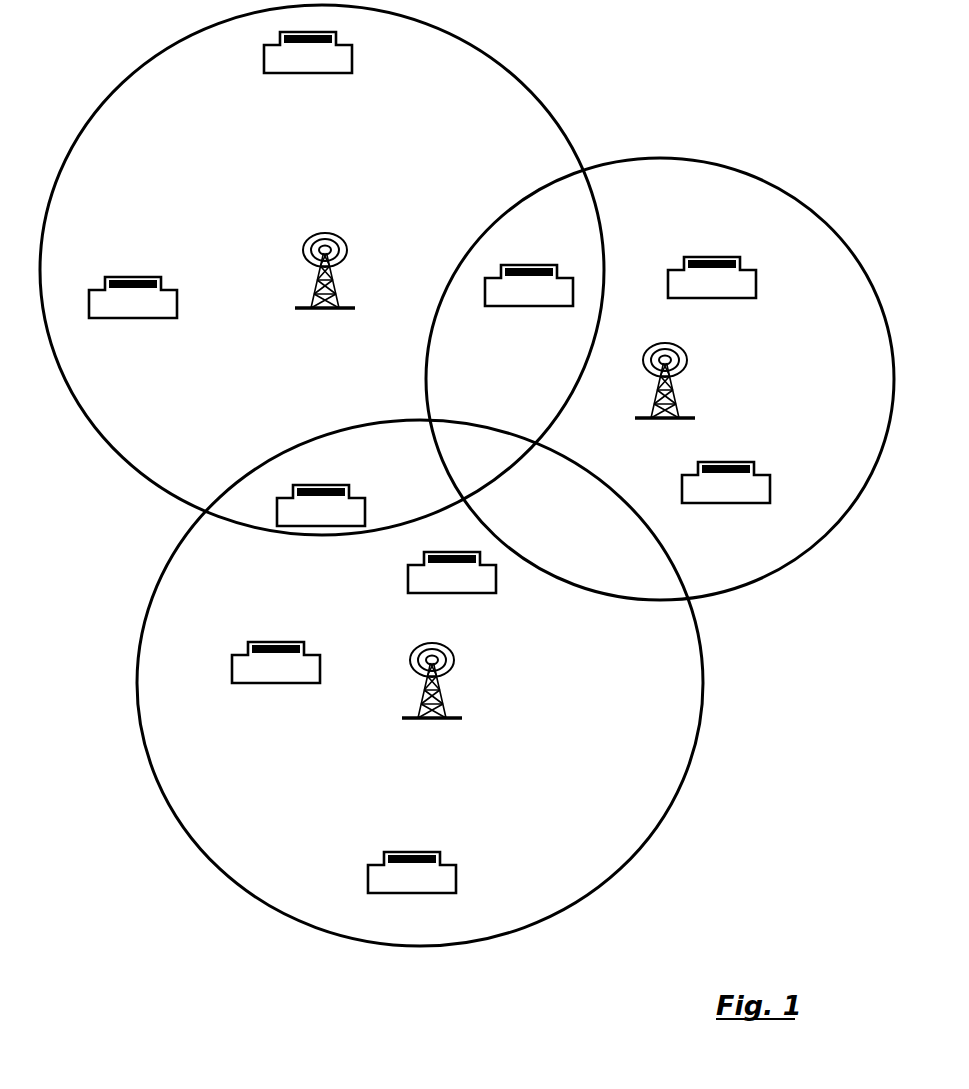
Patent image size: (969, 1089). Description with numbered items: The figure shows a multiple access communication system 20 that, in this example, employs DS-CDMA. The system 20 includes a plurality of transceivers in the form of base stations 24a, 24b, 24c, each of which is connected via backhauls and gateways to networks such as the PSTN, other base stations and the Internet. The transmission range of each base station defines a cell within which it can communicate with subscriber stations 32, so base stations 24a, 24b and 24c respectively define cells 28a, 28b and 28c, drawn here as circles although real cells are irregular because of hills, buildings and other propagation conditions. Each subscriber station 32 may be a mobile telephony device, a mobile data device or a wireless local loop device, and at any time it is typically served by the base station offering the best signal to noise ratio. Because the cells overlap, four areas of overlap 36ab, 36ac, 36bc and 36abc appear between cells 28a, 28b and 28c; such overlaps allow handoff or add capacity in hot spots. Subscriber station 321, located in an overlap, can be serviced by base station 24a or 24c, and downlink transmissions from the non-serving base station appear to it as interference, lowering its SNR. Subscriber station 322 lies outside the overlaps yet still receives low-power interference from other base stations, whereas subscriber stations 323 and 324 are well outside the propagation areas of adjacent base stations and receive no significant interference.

The multiple access communication system 20 is at (700, 103).
The base station 24a is at (325, 289).
The base station 24b is at (665, 400).
The base station 24c is at (432, 700).
The cell 28a is at (322, 270).
The cell 28b is at (660, 379).
The cell 28c is at (421, 683).
The subscriber station 32 is at (429, 470).
The subscriber station 321 is at (321, 506).
The subscriber station 322 is at (452, 573).
The subscriber station 323 is at (412, 873).
The subscriber station 324 is at (308, 53).
The area of overlap 36ab is at (533, 361).
The area of overlap 36ac is at (398, 478).
The area of overlap 36abc is at (486, 456).
The area of overlap 36bc is at (565, 523).